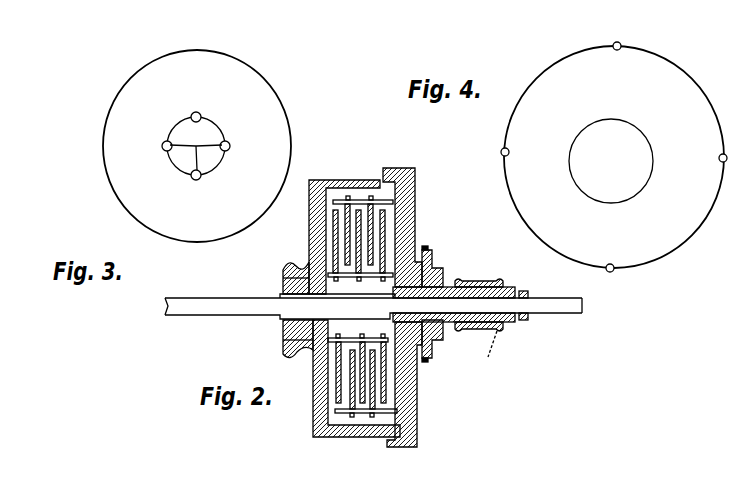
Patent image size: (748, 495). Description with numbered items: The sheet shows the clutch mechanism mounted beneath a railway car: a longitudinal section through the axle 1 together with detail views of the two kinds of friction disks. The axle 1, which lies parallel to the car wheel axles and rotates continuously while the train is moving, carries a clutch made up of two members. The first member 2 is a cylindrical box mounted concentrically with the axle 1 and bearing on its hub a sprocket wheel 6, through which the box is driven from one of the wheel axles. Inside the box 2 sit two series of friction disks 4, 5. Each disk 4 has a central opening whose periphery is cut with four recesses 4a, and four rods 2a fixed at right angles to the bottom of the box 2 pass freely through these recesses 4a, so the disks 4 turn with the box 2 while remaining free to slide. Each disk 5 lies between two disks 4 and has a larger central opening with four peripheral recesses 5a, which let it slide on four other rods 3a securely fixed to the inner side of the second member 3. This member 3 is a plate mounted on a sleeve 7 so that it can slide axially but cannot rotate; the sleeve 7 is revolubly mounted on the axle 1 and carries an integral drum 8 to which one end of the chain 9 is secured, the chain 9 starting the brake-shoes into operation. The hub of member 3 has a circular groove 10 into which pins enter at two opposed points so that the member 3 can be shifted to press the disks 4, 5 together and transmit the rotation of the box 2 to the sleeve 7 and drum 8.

In FIG. 2, the axle 1 is at (536, 297).
In FIG. 2, the clutch member (cylindrical box) 2 is at (361, 437).
In FIG. 2, the rods 2a is at (352, 339).
In FIG. 2, the clutch member (plate) 3 is at (418, 386).
In FIG. 2, the rods 3a is at (336, 201).
In FIG. 3, the friction disks 4 is at (265, 97).
In FIG. 2, the friction disks 4 is at (390, 233).
In FIG. 3, the recesses 4a is at (196, 123).
In FIG. 4, the friction disks 5 is at (661, 75).
In FIG. 2, the friction disks 5 is at (347, 230).
In FIG. 4, the peripheral recesses 5a is at (609, 281).
In FIG. 2, the sprocket wheel 6 is at (297, 352).
In FIG. 2, the sleeve 7 is at (509, 289).
In FIG. 2, the drum 8 is at (466, 282).
In FIG. 2, the chain 9 is at (494, 347).
In FIG. 2, the circular groove 10 is at (434, 268).